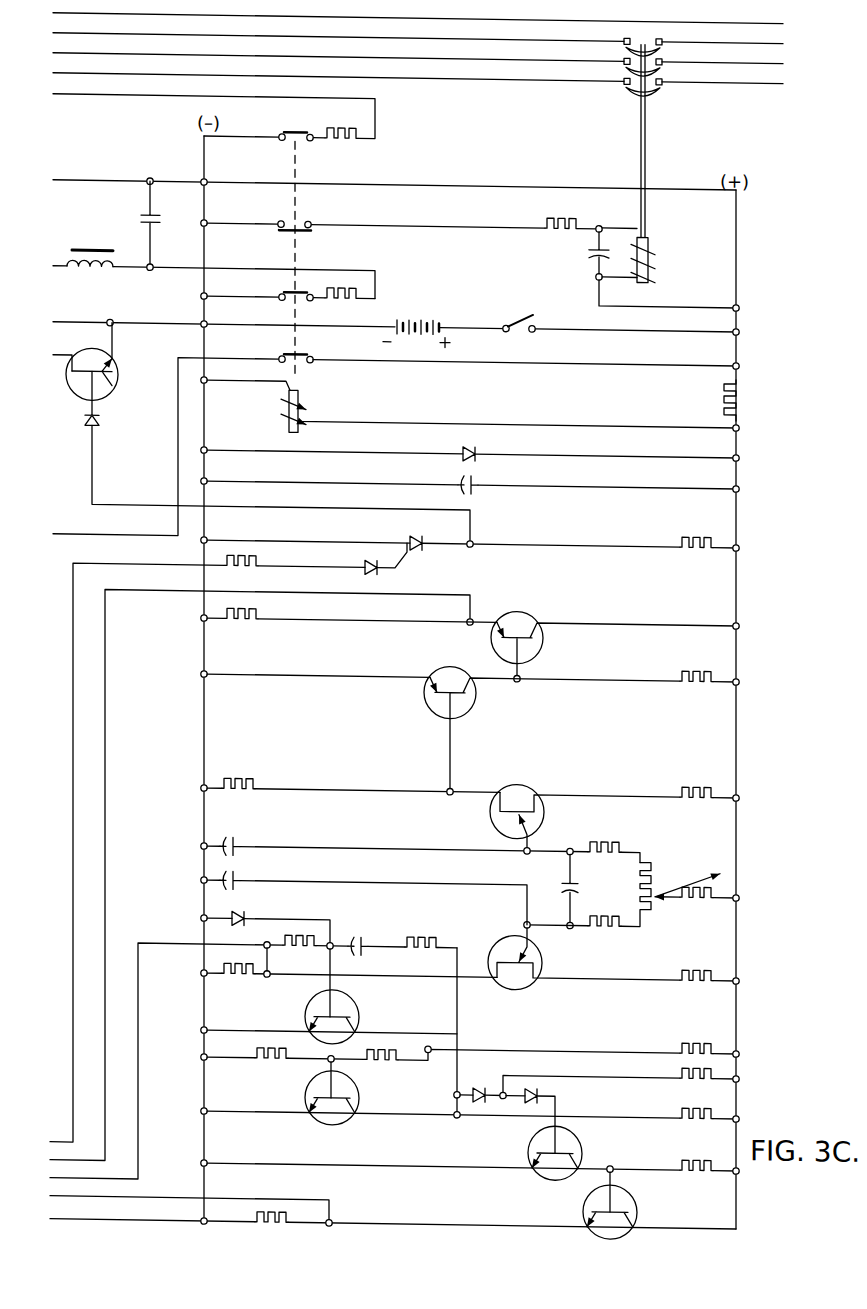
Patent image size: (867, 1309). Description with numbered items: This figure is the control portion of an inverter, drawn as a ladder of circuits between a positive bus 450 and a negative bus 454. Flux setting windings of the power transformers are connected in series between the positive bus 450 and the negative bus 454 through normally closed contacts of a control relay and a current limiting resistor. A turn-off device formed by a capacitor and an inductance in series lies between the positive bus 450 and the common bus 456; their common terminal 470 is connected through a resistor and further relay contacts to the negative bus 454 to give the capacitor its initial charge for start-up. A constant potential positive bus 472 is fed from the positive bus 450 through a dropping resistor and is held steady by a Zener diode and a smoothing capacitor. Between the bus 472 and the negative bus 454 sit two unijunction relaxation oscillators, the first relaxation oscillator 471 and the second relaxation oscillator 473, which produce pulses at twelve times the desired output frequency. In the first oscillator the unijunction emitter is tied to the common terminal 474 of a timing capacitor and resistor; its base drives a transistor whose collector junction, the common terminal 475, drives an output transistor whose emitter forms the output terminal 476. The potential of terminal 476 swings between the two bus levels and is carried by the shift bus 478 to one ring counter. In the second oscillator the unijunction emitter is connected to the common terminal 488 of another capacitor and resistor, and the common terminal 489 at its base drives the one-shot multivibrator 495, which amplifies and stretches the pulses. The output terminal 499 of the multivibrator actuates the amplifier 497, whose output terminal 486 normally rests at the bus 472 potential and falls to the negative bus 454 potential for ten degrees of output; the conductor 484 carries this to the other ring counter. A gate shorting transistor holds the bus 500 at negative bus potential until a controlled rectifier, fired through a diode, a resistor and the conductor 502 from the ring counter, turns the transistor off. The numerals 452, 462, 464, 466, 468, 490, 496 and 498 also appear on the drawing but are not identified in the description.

The positive bus 450 is at (106, 179).
The battery 452 is at (413, 320).
The negative bus 454 is at (80, 322).
The common bus 456 is at (59, 268).
The line 462 is at (103, 14).
The line 464 is at (103, 36).
The line 466 is at (103, 56).
The line 468 is at (103, 76).
The common terminal 470 is at (148, 272).
The first unijunction relaxation oscillator 471 is at (395, 730).
The constant potential positive bus 472 is at (737, 757).
The second unijunction relaxation oscillator 473 is at (635, 950).
The common terminal 474 is at (524, 849).
The common terminal 475 is at (522, 678).
The output terminal 476 is at (465, 618).
The shift bus 478 is at (136, 590).
The conductor 484 is at (71, 1199).
The output terminal 486 is at (334, 1221).
The common terminal 488 is at (523, 920).
The common terminal 489 is at (268, 978).
The line 490 is at (190, 944).
The one-shot multivibrator 495 is at (425, 1021).
The line 496 is at (131, 530).
The amplifier 497 is at (700, 1204).
The line 498 is at (460, 1018).
The output terminal 499 is at (456, 1118).
The bus 500 is at (61, 353).
The conductor 502 is at (123, 563).